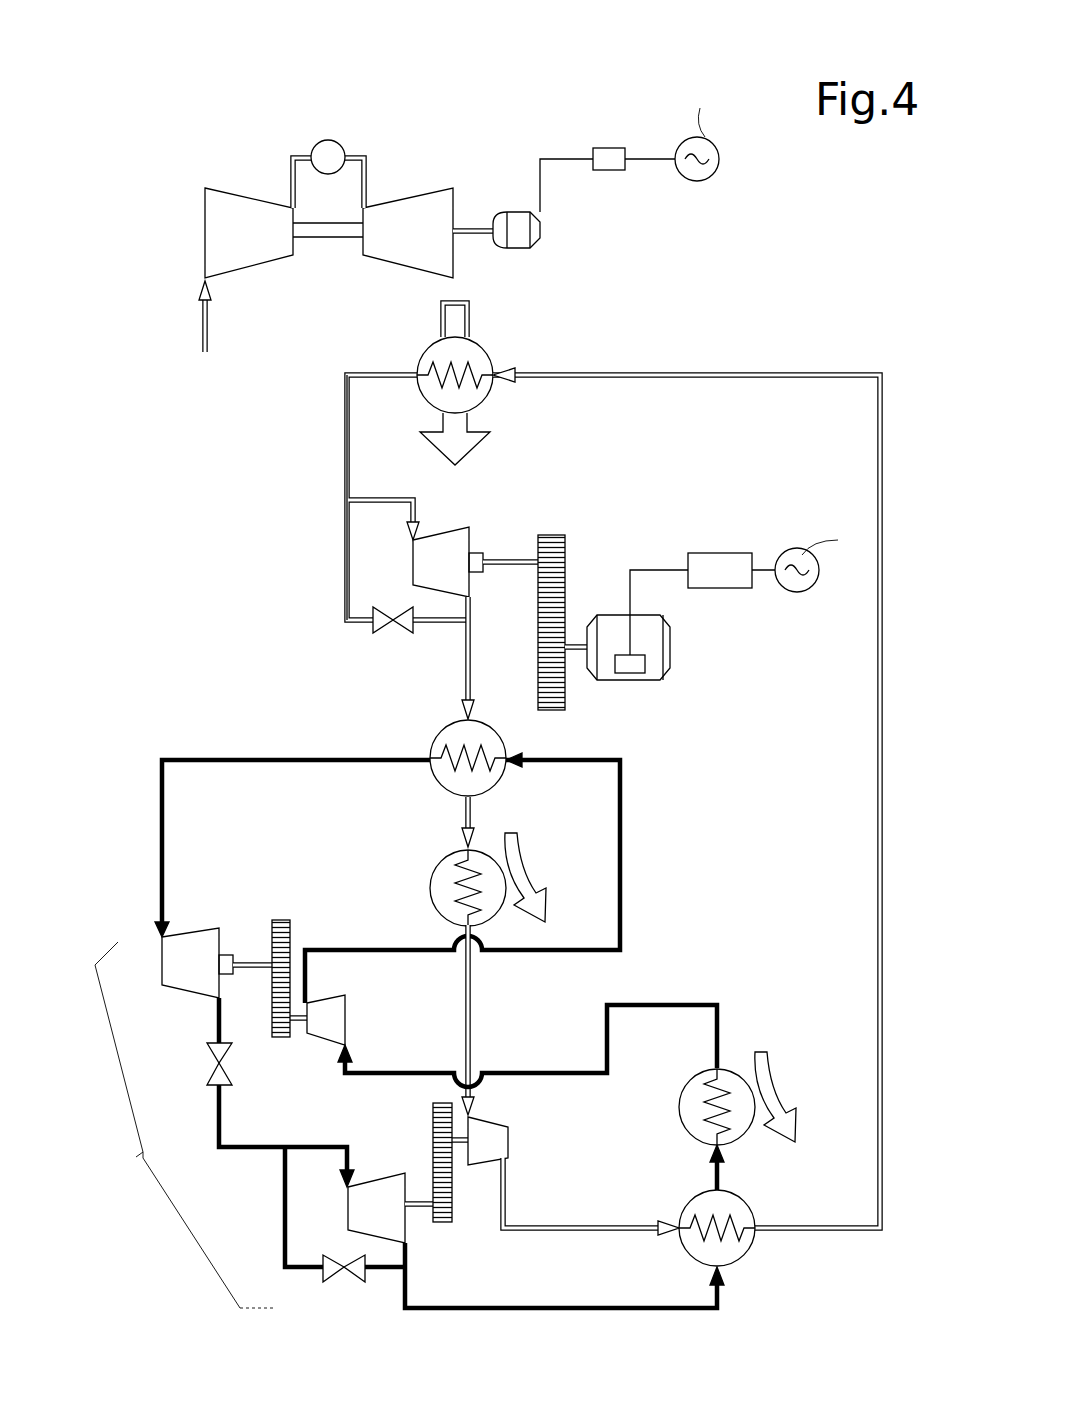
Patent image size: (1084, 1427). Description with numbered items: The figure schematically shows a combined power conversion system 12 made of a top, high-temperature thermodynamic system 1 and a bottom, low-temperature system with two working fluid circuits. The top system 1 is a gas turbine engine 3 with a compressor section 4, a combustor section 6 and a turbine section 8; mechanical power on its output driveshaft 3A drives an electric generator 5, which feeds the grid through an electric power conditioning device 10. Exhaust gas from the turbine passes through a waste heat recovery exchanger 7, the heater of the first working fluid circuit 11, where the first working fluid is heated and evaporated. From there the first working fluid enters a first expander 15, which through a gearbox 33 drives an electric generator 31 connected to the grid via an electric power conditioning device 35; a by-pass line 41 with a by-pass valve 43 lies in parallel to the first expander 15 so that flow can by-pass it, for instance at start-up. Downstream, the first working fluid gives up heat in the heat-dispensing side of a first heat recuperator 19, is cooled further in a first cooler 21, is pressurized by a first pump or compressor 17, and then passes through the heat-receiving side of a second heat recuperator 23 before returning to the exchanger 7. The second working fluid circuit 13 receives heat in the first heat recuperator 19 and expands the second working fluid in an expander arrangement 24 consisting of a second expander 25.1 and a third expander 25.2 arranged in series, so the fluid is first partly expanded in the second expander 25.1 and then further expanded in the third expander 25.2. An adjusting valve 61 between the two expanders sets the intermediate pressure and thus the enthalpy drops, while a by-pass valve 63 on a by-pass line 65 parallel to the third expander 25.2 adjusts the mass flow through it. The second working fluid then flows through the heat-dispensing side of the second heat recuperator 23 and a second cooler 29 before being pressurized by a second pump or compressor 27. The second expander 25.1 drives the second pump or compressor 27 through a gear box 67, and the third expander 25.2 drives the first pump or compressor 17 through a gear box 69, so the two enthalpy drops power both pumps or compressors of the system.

The top, high-temperature thermodynamic system 1 is at (217, 116).
The gas turbine engine 3 is at (525, 137).
The output driveshaft 3A is at (475, 234).
The compressor section 4 is at (243, 217).
The electric generator 5 is at (518, 210).
The combustor section 6 is at (330, 148).
The waste heat recovery exchanger 7 is at (436, 356).
The turbine section 8 is at (405, 216).
The electric power conditioning device 10 is at (612, 148).
The first working fluid circuit 11 is at (655, 342).
The combined power conversion system 12 is at (533, 72).
The second working fluid circuit 13 is at (153, 740).
The first expander 15 is at (446, 540).
The first pump or compressor 17 is at (500, 1142).
The first heat recuperator 19 is at (441, 740).
The first cooler 21 is at (446, 879).
The second heat recuperator 23 is at (723, 1205).
The expander arrangement 24 is at (185, 1125).
The second expander 25.1 is at (188, 940).
The third expander 25.2 is at (381, 1205).
The second pump or compressor 27 is at (336, 1010).
The second cooler 29 is at (688, 1107).
The electric generator 31 is at (655, 660).
The gearbox 33 is at (570, 532).
The electric power conditioning device 35 is at (712, 565).
The by-pass line 41 is at (345, 548).
The by-pass valve 43 is at (400, 636).
The adjusting valve 61 is at (211, 1050).
The by-pass valve 63 is at (331, 1272).
The by-pass line 65 is at (285, 1232).
The gear box 67 is at (296, 920).
The gear box 69 is at (462, 1215).